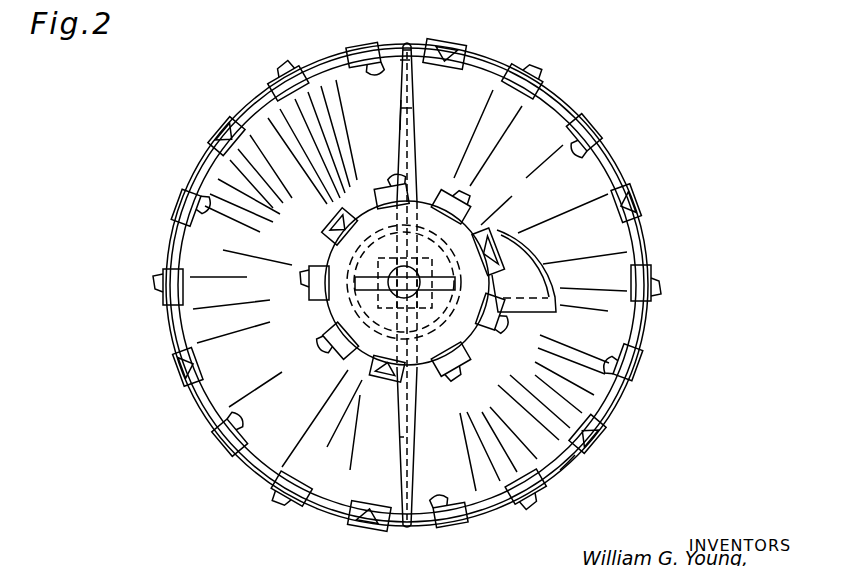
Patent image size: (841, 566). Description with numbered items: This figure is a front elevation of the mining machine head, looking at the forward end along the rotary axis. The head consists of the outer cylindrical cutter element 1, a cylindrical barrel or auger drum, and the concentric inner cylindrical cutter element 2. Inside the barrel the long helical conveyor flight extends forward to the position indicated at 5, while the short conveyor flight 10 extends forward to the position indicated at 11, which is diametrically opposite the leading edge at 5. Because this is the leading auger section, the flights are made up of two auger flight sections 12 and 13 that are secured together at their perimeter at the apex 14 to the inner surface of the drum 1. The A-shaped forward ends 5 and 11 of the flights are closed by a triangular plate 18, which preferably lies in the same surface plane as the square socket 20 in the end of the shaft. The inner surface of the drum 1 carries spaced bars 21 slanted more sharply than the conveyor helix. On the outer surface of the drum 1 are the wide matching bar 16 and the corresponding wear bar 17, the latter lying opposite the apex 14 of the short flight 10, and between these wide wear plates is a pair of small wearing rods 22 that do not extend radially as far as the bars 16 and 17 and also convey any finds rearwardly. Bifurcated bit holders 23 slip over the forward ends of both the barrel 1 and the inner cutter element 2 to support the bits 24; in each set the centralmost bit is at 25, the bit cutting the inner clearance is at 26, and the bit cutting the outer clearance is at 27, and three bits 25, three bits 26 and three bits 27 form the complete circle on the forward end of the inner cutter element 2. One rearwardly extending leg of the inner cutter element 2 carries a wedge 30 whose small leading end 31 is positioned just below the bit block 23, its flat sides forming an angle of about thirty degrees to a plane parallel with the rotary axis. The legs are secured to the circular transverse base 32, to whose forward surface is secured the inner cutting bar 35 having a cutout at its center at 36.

The outer cylindrical cutter element 1 is at (578, 96).
The inner cylindrical cutter element 2 is at (433, 200).
The leading edge position of conveyor flight 5 is at (401, 131).
The short conveyor flight 10 is at (414, 130).
The forward end position of short flight 11 is at (399, 437).
The auger flight section 12 is at (410, 104).
The auger flight section 13 is at (400, 108).
The apex of flight sections 14 is at (400, 60).
The matching bar 16 is at (265, 100).
The wear bar 17 is at (560, 471).
The triangular plate 18 is at (414, 438).
The square socket 20 is at (397, 259).
The spaced bars 21 is at (186, 236).
The small wearing rods 22 is at (440, 46).
The bit holders 23 is at (185, 175).
The bits 24 is at (246, 480).
The centralmost bit 25 is at (458, 31).
The inner clearance bit 26 is at (372, 52).
The outer clearance bit 27 is at (530, 62).
The wedge 30 is at (520, 258).
The small leading end of wedge 31 is at (510, 201).
The transverse base 32 is at (495, 280).
The inner cutting bar 35 is at (392, 329).
The center cutout 36 is at (393, 284).